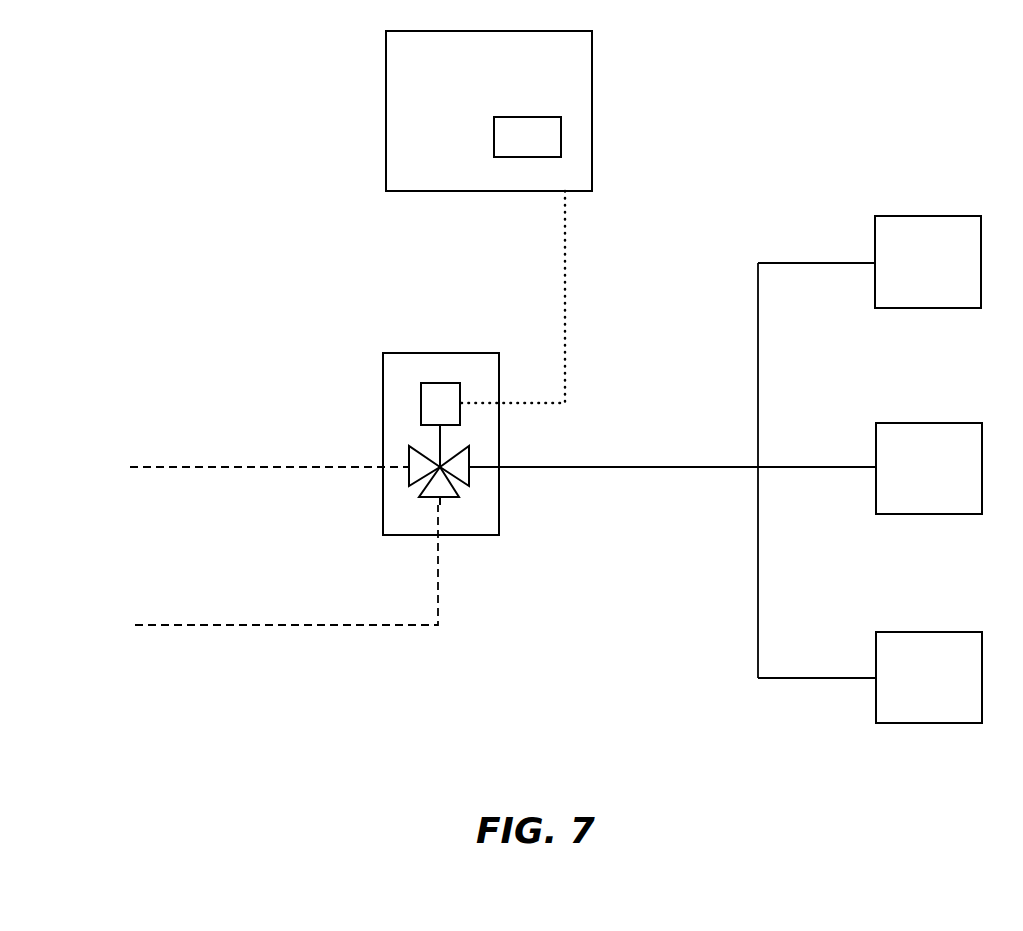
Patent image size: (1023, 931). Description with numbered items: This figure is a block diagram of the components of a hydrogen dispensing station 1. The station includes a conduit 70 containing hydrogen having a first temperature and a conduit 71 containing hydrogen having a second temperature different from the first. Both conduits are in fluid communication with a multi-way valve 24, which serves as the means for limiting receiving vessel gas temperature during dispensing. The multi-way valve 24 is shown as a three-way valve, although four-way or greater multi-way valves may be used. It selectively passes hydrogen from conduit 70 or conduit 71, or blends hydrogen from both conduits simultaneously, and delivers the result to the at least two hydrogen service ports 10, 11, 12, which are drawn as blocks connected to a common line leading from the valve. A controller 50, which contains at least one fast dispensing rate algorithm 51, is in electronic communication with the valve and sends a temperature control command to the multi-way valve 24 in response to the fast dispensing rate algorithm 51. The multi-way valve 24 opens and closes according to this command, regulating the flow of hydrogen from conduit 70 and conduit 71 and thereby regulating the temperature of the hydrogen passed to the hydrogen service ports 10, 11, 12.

The hydrogen dispensing station 1 is at (697, 99).
The hydrogen service port 10 is at (945, 277).
The hydrogen service port 11 is at (919, 482).
The hydrogen service port 12 is at (947, 692).
The multi-way valve 24 is at (400, 352).
The controller 50 is at (412, 87).
The fast dispensing rate algorithm 51 is at (508, 153).
The conduit 70 is at (242, 467).
The conduit 71 is at (238, 625).